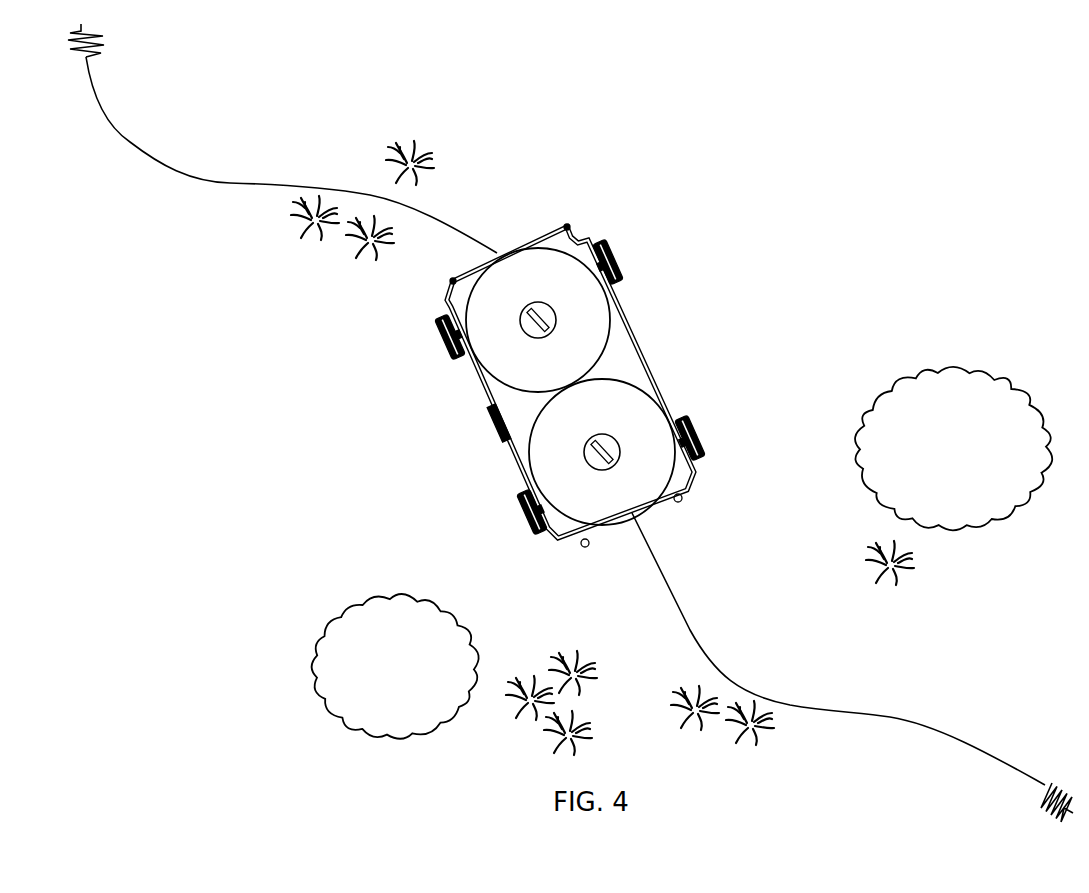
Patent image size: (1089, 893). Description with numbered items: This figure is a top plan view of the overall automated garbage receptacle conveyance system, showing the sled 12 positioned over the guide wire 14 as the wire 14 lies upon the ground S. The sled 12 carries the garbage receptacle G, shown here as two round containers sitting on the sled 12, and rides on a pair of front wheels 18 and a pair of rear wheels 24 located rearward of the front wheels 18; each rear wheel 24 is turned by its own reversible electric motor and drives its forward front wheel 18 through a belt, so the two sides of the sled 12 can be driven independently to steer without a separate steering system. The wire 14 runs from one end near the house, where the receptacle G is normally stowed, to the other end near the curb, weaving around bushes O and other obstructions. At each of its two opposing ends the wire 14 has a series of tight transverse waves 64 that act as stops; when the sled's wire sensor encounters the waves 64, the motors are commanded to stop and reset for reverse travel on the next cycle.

The sled 12 is at (655, 342).
The guide wire 14 is at (960, 722).
The front wheels 18 is at (620, 247).
The rear wheels 24 is at (693, 432).
The transverse waves 64 is at (105, 41).
The garbage receptacle G is at (600, 318).
The ground S is at (932, 262).
The bushes O is at (1005, 390).